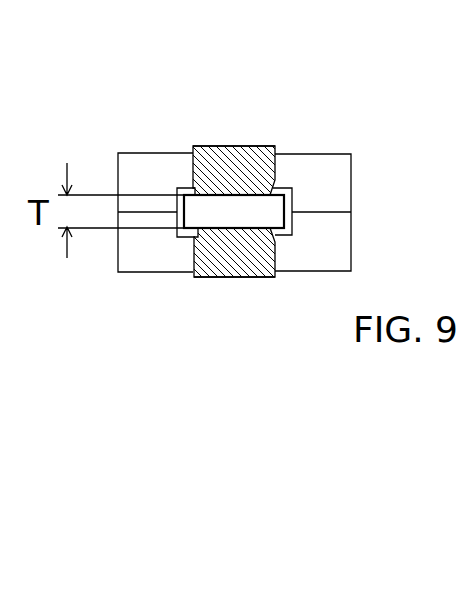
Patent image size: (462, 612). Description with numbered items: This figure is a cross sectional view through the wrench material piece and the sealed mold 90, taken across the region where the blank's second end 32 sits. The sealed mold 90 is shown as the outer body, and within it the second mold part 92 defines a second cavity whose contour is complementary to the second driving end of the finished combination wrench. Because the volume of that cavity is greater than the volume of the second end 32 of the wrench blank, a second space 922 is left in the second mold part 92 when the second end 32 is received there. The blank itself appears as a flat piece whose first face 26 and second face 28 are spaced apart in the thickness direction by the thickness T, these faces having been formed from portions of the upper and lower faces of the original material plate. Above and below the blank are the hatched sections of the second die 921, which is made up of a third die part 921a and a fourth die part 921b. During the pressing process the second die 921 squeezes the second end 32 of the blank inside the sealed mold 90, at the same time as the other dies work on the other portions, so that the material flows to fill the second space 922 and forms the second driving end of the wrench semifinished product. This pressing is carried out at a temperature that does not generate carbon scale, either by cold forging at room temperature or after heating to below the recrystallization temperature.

The first face 26 is at (245, 116).
The second face 28 is at (265, 288).
The second end 32 is at (202, 213).
The sealed mold 90 is at (145, 253).
The second mold part 92 is at (246, 178).
The second die 921 is at (257, 193).
The third die part 921a is at (210, 165).
The fourth die part 921b is at (247, 263).
The second space 922 is at (285, 201).